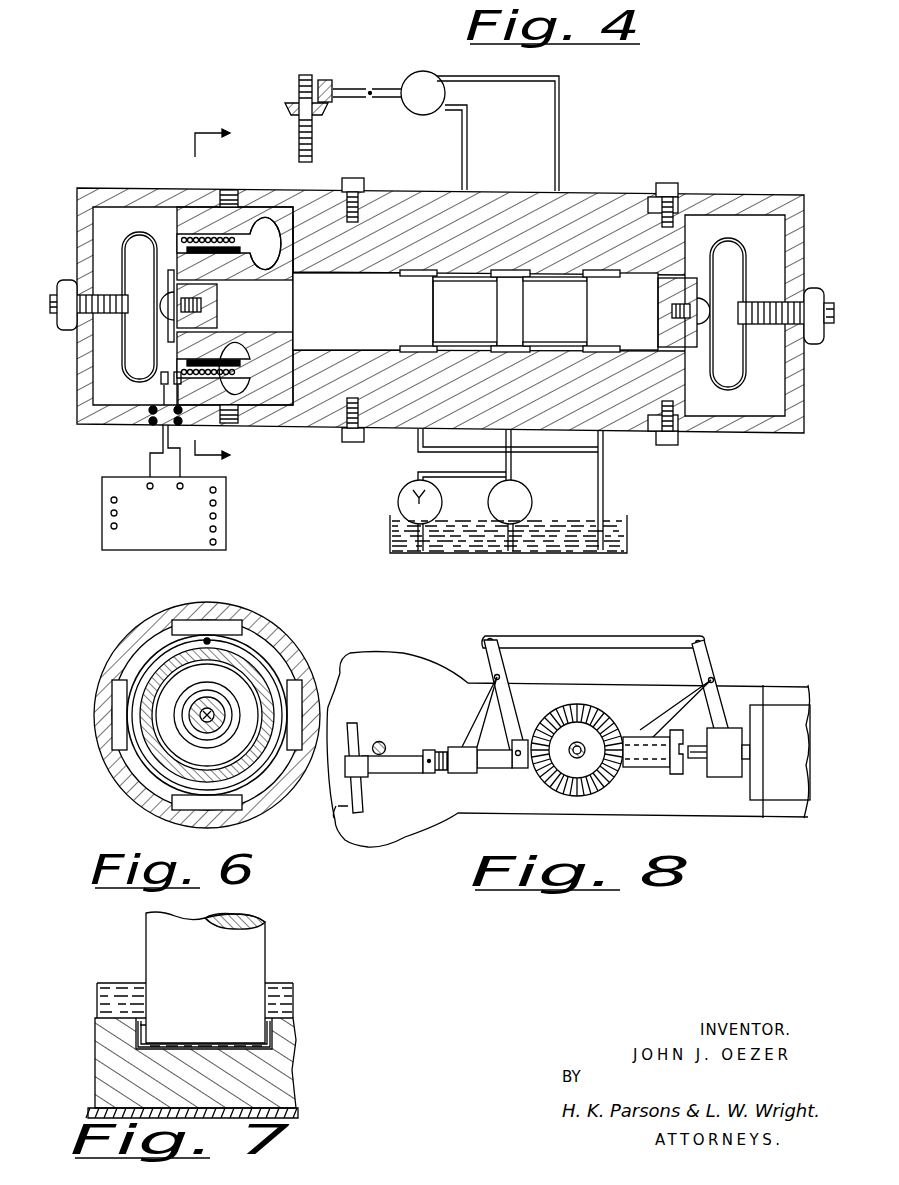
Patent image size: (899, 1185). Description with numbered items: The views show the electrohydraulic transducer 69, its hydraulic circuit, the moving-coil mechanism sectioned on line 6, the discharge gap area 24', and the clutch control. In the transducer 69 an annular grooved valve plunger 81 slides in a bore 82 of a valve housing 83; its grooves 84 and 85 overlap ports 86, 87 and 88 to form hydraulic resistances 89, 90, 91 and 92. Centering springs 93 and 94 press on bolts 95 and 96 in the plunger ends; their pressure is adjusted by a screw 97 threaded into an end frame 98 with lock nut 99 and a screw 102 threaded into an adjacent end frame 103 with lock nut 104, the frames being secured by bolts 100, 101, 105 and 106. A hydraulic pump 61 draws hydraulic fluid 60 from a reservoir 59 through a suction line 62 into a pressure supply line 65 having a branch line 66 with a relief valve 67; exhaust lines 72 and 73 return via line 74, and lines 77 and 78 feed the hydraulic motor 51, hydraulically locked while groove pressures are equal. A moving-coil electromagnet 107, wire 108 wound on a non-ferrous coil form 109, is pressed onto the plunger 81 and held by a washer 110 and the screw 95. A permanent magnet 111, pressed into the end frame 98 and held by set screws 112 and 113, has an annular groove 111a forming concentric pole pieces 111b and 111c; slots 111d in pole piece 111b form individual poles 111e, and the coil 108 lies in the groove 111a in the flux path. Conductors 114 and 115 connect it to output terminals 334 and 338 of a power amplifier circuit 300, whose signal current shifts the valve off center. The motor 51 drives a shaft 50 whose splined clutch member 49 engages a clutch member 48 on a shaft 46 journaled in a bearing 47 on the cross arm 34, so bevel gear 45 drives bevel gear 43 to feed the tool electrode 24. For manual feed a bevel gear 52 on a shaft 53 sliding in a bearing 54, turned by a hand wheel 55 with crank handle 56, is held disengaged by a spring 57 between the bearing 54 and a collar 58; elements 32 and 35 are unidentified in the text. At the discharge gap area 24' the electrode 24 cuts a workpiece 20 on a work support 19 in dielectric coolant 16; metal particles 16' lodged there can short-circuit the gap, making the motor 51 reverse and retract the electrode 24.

In FIG. 4, the end frame 98 is at (82, 188).
In FIG. 6, the end frame 98 is at (132, 620).
In FIG. 4, the transducer 69 is at (126, 150).
In FIG. 4, the section line 6 is at (220, 295).
In FIG. 4, the centering spring 93 is at (136, 378).
In FIG. 4, the screw 97 is at (88, 314).
In FIG. 4, the lock nut 99 is at (68, 280).
In FIG. 4, the washer 110 is at (170, 272).
In FIG. 4, the bolt 95 is at (214, 304).
In FIG. 4, the coil form 109 is at (174, 216).
In FIG. 6, the coil form 109 is at (150, 720).
In FIG. 4, the moving-coil electromagnet 107 is at (190, 238).
In FIG. 4, the annular groove 111a is at (270, 242).
In FIG. 6, the annular groove 111a is at (152, 640).
In FIG. 4, the permanent magnet 111 is at (295, 206).
In FIG. 4, the set screw 112 is at (230, 194).
In FIG. 4, the coil 108 is at (204, 400).
In FIG. 6, the coil 108 is at (164, 680).
In FIG. 4, the set screw 113 is at (232, 422).
In FIG. 4, the conductor 114 is at (148, 441).
In FIG. 4, the conductor 115 is at (184, 445).
In FIG. 4, the power amplifier circuit 300 is at (102, 538).
In FIG. 4, the output terminal 334 is at (146, 484).
In FIG. 4, the output terminal 338 is at (182, 487).
In FIG. 4, the valve plunger 81 is at (320, 348).
In FIG. 6, the valve plunger 81 is at (190, 736).
In FIG. 4, the bore 82 is at (374, 269).
In FIG. 4, the valve housing 83 is at (426, 198).
In FIG. 4, the annular groove 84 is at (440, 282).
In FIG. 4, the port 86 is at (416, 348).
In FIG. 4, the hydraulic resistance 89 is at (436, 340).
In FIG. 4, the port 87 is at (512, 352).
In FIG. 4, the hydraulic resistance 90 is at (492, 344).
In FIG. 4, the hydraulic resistance 91 is at (528, 344).
In FIG. 4, the hydraulic resistance 92 is at (584, 344).
In FIG. 4, the annular groove 85 is at (578, 284).
In FIG. 4, the port 88 is at (610, 348).
In FIG. 4, the bolt 96 is at (672, 314).
In FIG. 4, the centering spring 94 is at (732, 388).
In FIG. 4, the screw 102 is at (762, 300).
In FIG. 4, the lock nut 104 is at (814, 288).
In FIG. 4, the end frame 103 is at (730, 200).
In FIG. 4, the bolt 105 is at (666, 183).
In FIG. 4, the bolt 106 is at (674, 442).
In FIG. 4, the bolt 100 is at (354, 184).
In FIG. 4, the bolt 101 is at (348, 444).
In FIG. 4, the hydraulic motor 51 is at (416, 112).
In FIG. 8, the hydraulic motor 51 is at (774, 714).
In FIG. 4, the line 77 is at (468, 130).
In FIG. 4, the line 78 is at (554, 158).
In FIG. 4, the bevel gear 45 is at (322, 80).
In FIG. 8, the bevel gear 45 is at (628, 766).
In FIG. 4, the bevel gear 43 is at (284, 106).
In FIG. 8, the bevel gear 43 is at (564, 788).
In FIG. 4, the threaded shaft 35 is at (310, 148).
In FIG. 8, the threaded shaft 35 is at (582, 742).
In FIG. 4, the line 72 is at (418, 456).
In FIG. 4, the line 73 is at (604, 438).
In FIG. 4, the line 74 is at (604, 470).
In FIG. 4, the pressure supply line 65 is at (512, 464).
In FIG. 4, the branch line 66 is at (416, 474).
In FIG. 4, the relief valve 67 is at (398, 508).
In FIG. 4, the hydraulic pump 61 is at (532, 498).
In FIG. 4, the reservoir 59 is at (626, 516).
In FIG. 4, the hydraulic fluid 60 is at (444, 554).
In FIG. 4, the suction line 62 is at (528, 552).
In FIG. 6, the slots 111d is at (170, 620).
In FIG. 6, the pole piece 111c is at (276, 642).
In FIG. 6, the individual poles 111e is at (222, 624).
In FIG. 6, the pole piece 111b is at (156, 662).
In FIG. 8, the cross arm 34 is at (530, 682).
In FIG. 8, the bevel gear 52 is at (520, 770).
In FIG. 8, the shaft 53 is at (400, 770).
In FIG. 8, the hand wheel 55 is at (360, 810).
In FIG. 8, the crank handle 56 is at (346, 820).
In FIG. 8, the pivot 32 is at (386, 746).
In FIG. 8, the collar 58 is at (428, 772).
In FIG. 8, the spring 57 is at (440, 748).
In FIG. 8, the bearing 54 is at (466, 774).
In FIG. 8, the shaft 46 is at (632, 737).
In FIG. 8, the bearing 47 is at (652, 776).
In FIG. 8, the clutch member 48 is at (676, 768).
In FIG. 8, the shaft 50 is at (694, 762).
In FIG. 8, the clutch member 49 is at (728, 766).
In FIG. 7, the workpiece 20 is at (94, 1051).
In FIG. 7, the work support 19 is at (92, 1113).
In FIG. 7, the discharge gap area 24' is at (243, 1044).
In FIG. 7, the dielectric coolant 16 is at (192, 997).
In FIG. 7, the metal particles 16' is at (323, 1021).
In FIG. 7, the tool electrode 24 is at (183, 977).